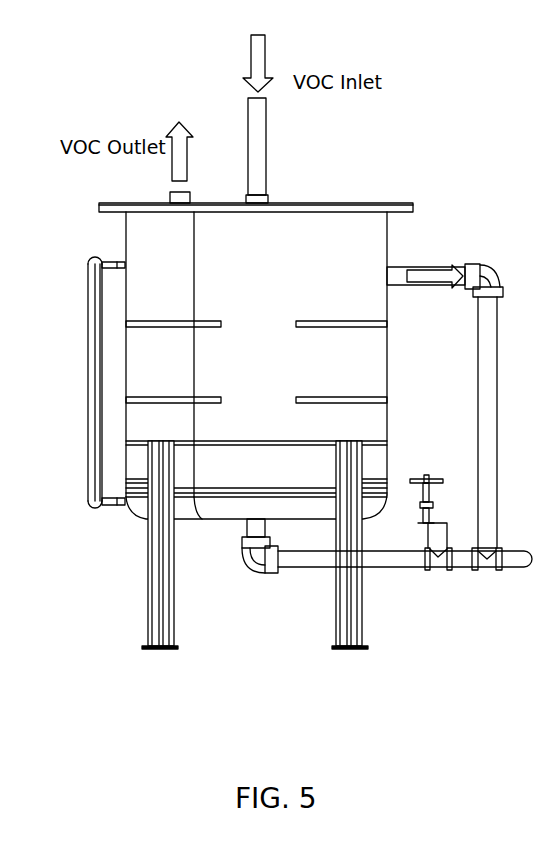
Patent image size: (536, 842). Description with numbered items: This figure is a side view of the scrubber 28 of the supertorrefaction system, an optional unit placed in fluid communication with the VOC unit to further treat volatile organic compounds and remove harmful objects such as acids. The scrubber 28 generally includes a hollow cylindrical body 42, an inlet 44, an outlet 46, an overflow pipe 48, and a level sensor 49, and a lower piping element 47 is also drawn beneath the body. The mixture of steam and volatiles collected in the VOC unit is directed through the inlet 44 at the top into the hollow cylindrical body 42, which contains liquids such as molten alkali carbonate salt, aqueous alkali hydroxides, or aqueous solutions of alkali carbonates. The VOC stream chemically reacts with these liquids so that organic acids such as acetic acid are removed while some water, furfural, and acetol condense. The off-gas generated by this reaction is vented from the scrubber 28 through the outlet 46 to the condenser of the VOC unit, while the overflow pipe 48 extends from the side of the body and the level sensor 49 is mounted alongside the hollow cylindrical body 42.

The scrubber 28 is at (85, 274).
The hollow cylindrical body 42 is at (270, 351).
The inlet 44 is at (262, 114).
The outlet 46 is at (185, 193).
The drain line 47 is at (389, 546).
The overflow pipe 48 is at (472, 224).
The level sensor 49 is at (93, 404).